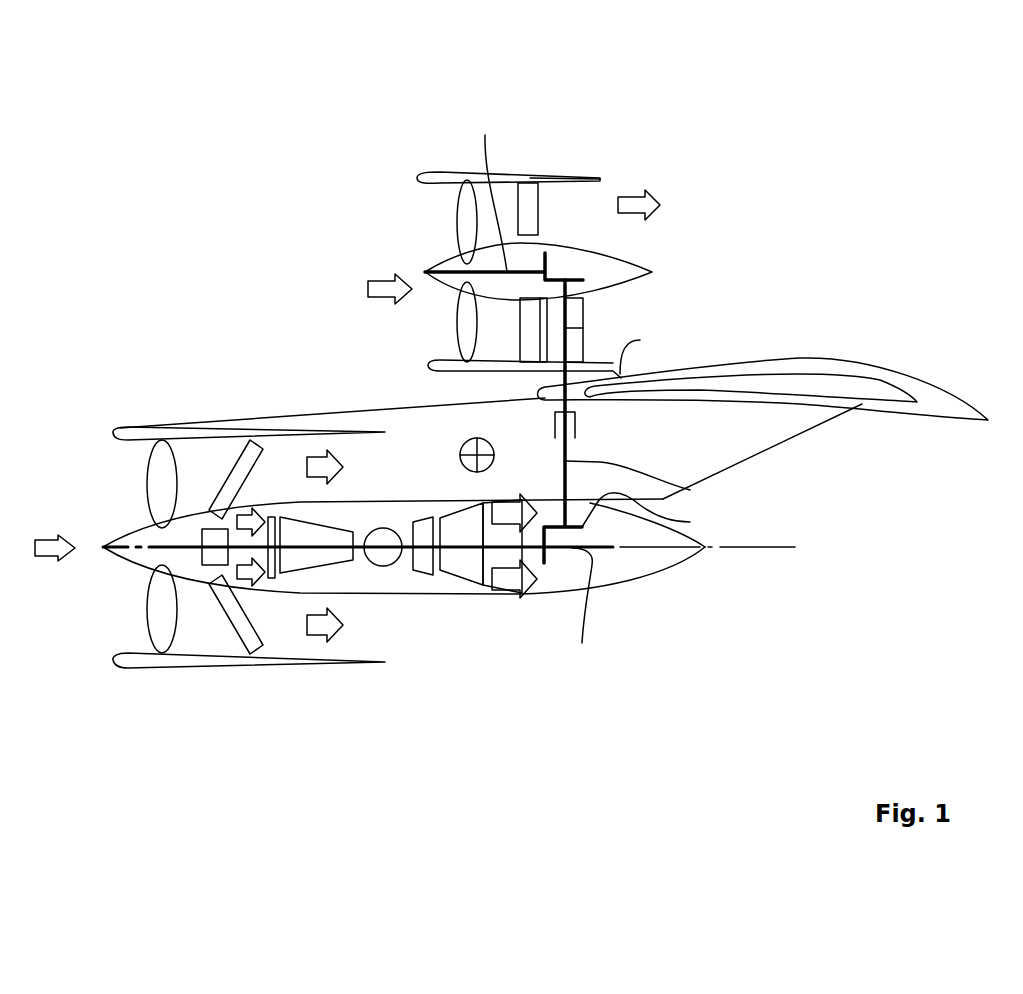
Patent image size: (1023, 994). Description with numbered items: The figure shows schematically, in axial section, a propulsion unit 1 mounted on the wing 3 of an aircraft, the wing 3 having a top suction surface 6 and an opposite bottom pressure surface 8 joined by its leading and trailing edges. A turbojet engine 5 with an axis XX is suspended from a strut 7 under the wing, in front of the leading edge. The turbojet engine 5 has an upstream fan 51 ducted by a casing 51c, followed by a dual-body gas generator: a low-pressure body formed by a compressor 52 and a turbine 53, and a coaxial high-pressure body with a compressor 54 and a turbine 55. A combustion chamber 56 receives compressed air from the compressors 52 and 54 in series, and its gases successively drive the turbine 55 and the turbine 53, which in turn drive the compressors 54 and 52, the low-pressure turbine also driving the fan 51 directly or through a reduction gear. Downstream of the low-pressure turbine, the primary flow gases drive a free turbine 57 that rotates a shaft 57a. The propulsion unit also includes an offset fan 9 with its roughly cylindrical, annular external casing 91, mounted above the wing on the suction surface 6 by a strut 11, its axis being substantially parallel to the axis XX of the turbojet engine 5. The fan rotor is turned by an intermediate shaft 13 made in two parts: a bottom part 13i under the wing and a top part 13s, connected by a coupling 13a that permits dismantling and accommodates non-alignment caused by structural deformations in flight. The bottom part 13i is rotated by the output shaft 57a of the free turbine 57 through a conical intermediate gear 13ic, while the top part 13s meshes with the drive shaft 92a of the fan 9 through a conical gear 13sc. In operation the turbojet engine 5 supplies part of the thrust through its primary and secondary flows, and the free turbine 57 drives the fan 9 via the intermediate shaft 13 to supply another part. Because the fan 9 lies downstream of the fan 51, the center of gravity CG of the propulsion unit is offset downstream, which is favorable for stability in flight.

The propulsion unit 1 is at (358, 239).
The wing 3 is at (880, 363).
The turbojet engine 5 is at (487, 640).
The suction surface 6 is at (795, 362).
The strut 7 is at (747, 455).
The pressure surface 8 is at (938, 417).
The fan 9 is at (580, 172).
The strut 11 is at (640, 340).
The intermediate shaft 13 is at (596, 419).
The coupling 13a is at (583, 426).
The top part of the intermediate shaft 13s is at (583, 325).
The conical gear 13sc is at (563, 293).
The bottom part of the intermediate shaft 13i is at (690, 490).
The conical intermediate gear 13ic is at (690, 522).
The upstream fan 51 is at (158, 618).
The casing 51c is at (196, 655).
The low-pressure compressor 52 is at (265, 552).
The low-pressure turbine 53 is at (335, 560).
The high-pressure compressor 54 is at (422, 558).
The high-pressure turbine 55 is at (463, 558).
The combustion chamber 56 is at (387, 553).
The free turbine 57 is at (503, 550).
The shaft 57a is at (589, 615).
The casing 91 is at (453, 177).
The drive shaft 92a is at (488, 191).
The center of gravity CG is at (468, 447).
The axis XX is at (765, 553).